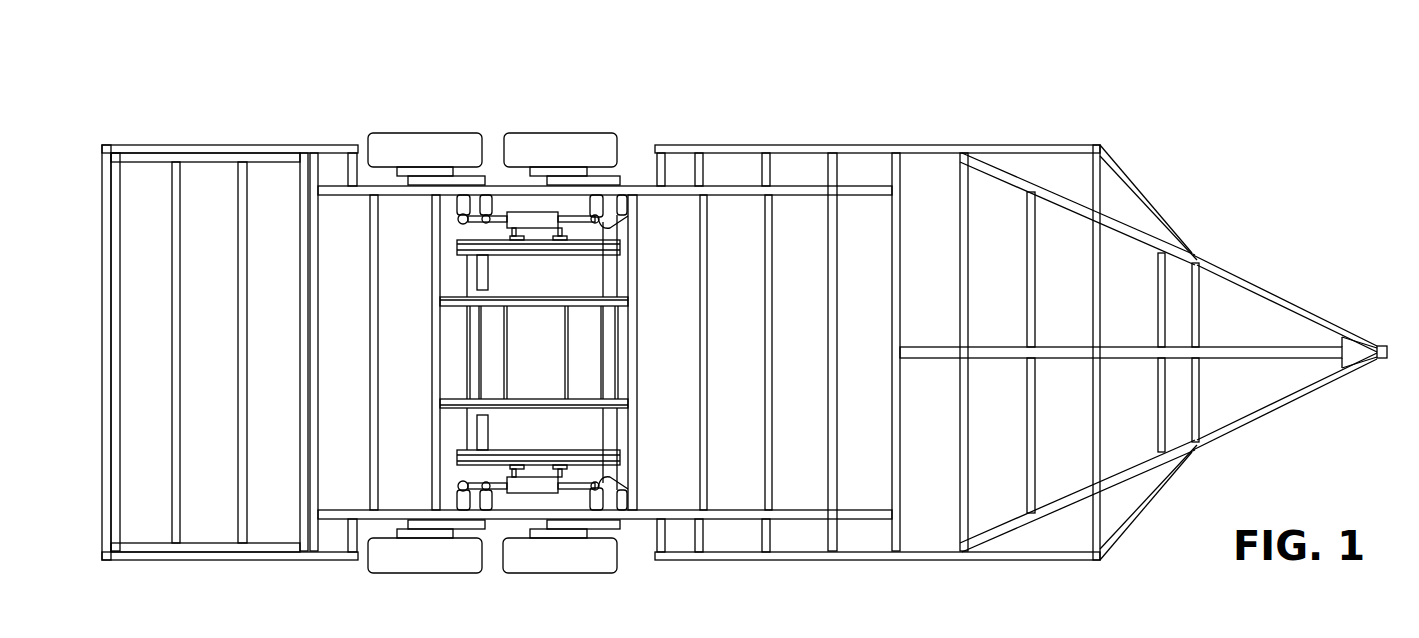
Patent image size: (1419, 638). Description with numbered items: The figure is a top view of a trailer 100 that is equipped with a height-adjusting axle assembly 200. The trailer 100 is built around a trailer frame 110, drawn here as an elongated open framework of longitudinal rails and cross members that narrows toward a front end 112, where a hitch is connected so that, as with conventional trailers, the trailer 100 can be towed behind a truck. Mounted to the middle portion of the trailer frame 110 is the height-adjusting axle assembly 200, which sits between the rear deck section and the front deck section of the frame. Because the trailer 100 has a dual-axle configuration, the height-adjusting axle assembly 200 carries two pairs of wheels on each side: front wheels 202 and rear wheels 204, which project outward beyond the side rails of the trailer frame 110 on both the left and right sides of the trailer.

The trailer 100 is at (744, 337).
The trailer frame 110 is at (993, 139).
The front end 112 is at (1367, 338).
The height-adjusting axle assembly 200 is at (627, 130).
The front wheels 202 is at (563, 143).
The rear wheels 204 is at (440, 142).